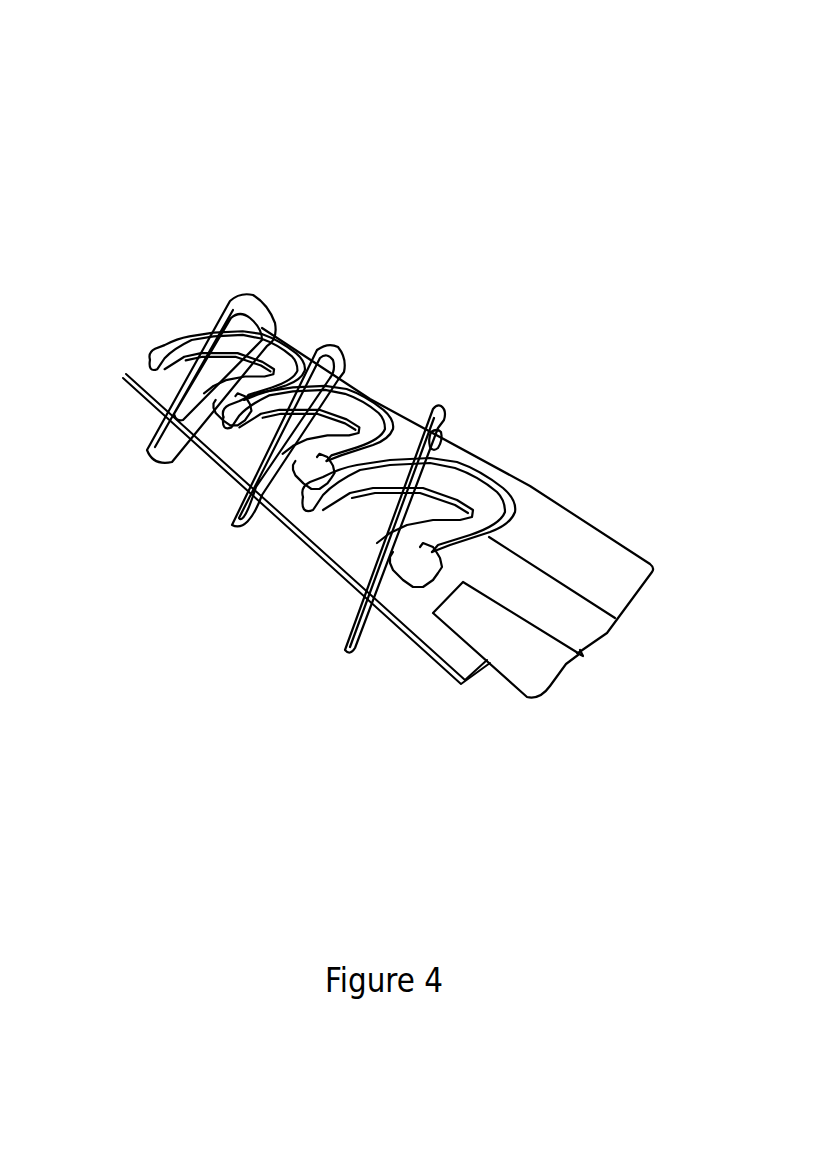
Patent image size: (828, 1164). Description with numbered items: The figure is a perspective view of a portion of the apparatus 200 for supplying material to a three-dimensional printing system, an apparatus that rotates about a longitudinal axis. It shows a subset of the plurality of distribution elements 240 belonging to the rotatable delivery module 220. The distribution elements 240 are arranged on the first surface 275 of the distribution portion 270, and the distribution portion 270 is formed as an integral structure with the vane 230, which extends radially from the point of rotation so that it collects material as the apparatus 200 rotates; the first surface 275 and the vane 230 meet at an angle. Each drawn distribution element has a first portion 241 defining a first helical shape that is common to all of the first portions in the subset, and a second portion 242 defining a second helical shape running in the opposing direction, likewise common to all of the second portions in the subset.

The apparatus 200 is at (93, 72).
The rotatable delivery module 220 is at (582, 653).
The vane 230 is at (555, 497).
The distribution elements 240 is at (285, 285).
The first portion 241 is at (148, 455).
The second portion 242 is at (167, 338).
The distribution portion 270 is at (490, 665).
The first surface 275 is at (452, 648).